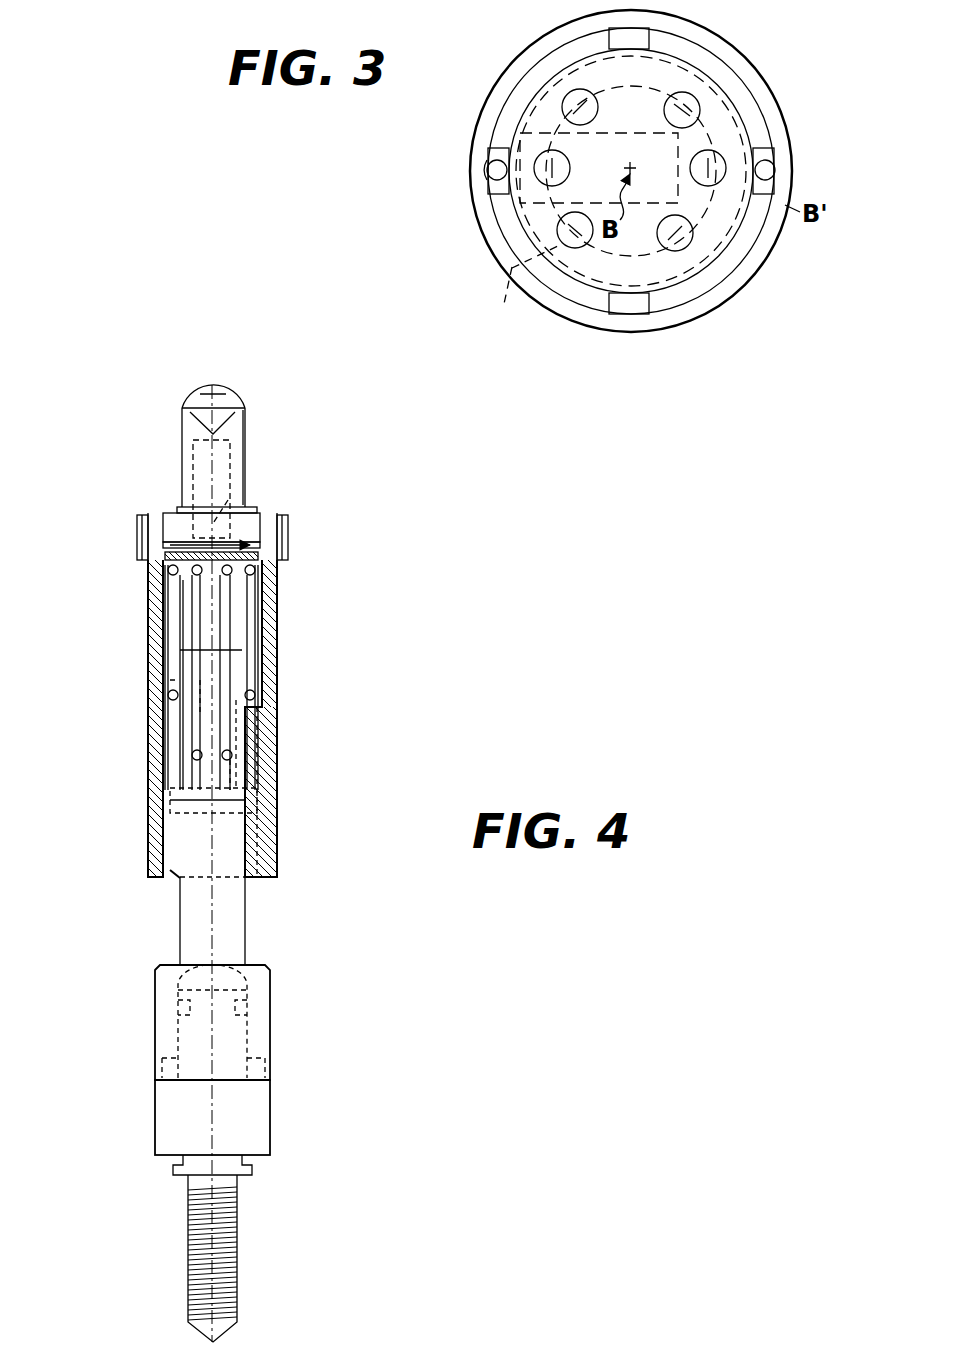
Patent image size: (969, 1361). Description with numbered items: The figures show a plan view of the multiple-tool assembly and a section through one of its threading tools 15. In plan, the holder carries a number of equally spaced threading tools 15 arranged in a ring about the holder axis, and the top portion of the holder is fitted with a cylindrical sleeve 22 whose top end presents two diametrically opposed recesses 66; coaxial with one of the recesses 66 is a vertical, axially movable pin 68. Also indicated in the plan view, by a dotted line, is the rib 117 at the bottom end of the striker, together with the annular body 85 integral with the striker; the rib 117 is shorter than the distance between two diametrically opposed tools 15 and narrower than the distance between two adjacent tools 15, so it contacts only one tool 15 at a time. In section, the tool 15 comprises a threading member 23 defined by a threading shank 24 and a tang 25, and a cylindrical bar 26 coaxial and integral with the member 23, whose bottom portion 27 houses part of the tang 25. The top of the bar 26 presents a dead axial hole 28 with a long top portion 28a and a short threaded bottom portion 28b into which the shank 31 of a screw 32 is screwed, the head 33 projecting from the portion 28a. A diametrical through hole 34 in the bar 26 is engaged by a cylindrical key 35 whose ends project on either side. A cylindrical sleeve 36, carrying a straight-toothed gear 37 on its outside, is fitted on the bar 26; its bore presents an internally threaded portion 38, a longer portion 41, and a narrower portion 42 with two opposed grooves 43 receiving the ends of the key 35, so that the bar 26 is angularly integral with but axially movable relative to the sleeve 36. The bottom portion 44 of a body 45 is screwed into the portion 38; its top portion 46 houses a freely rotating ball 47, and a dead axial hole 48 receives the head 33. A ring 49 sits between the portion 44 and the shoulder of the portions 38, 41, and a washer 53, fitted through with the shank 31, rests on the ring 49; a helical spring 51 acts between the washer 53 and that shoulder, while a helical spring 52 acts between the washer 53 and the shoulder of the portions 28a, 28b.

In FIG. 3, the threading tool 15 is at (698, 190).
In FIG. 4, the threading tool 15 is at (460, 585).
In FIG. 3, the cylindrical sleeve 22 is at (800, 178).
In FIG. 4, the threading member 23 is at (310, 1170).
In FIG. 4, the threading shank 24 is at (240, 1262).
In FIG. 4, the tang 25 is at (247, 1103).
In FIG. 4, the cylindrical bar 26 is at (258, 925).
In FIG. 4, the bottom portion 27 is at (255, 1038).
In FIG. 4, the dead axial hole 28 is at (235, 655).
In FIG. 4, the top portion 28a is at (163, 680).
In FIG. 4, the threaded bottom portion 28b is at (273, 773).
In FIG. 4, the shank 31 is at (273, 738).
In FIG. 4, the screw 32 is at (277, 573).
In FIG. 4, the head 33 is at (248, 497).
In FIG. 4, the diametrical through hole 34 is at (177, 867).
In FIG. 4, the cylindrical key 35 is at (163, 800).
In FIG. 4, the cylindrical sleeve 36 is at (146, 784).
In FIG. 4, the straight-toothed gear 37 is at (290, 548).
In FIG. 4, the internally threaded portion 38 is at (182, 544).
In FIG. 4, the portion 41 is at (163, 592).
In FIG. 4, the portion 42 is at (180, 750).
In FIG. 4, the groove 43 is at (170, 870).
In FIG. 4, the bottom portion 44 is at (176, 520).
In FIG. 4, the body 45 is at (176, 430).
In FIG. 4, the top portion 46 is at (246, 432).
In FIG. 4, the ball 47 is at (230, 390).
In FIG. 4, the dead axial hole 48 is at (198, 486).
In FIG. 4, the ring 49 is at (285, 540).
In FIG. 4, the helical spring 51 is at (270, 662).
In FIG. 4, the helical spring 52 is at (180, 650).
In FIG. 4, the washer 53 is at (163, 535).
In FIG. 3, the recess 66 is at (503, 186).
In FIG. 3, the pin 68 is at (503, 190).
In FIG. 3, the annular body 85 is at (724, 82).
In FIG. 3, the rib 117 is at (523, 293).